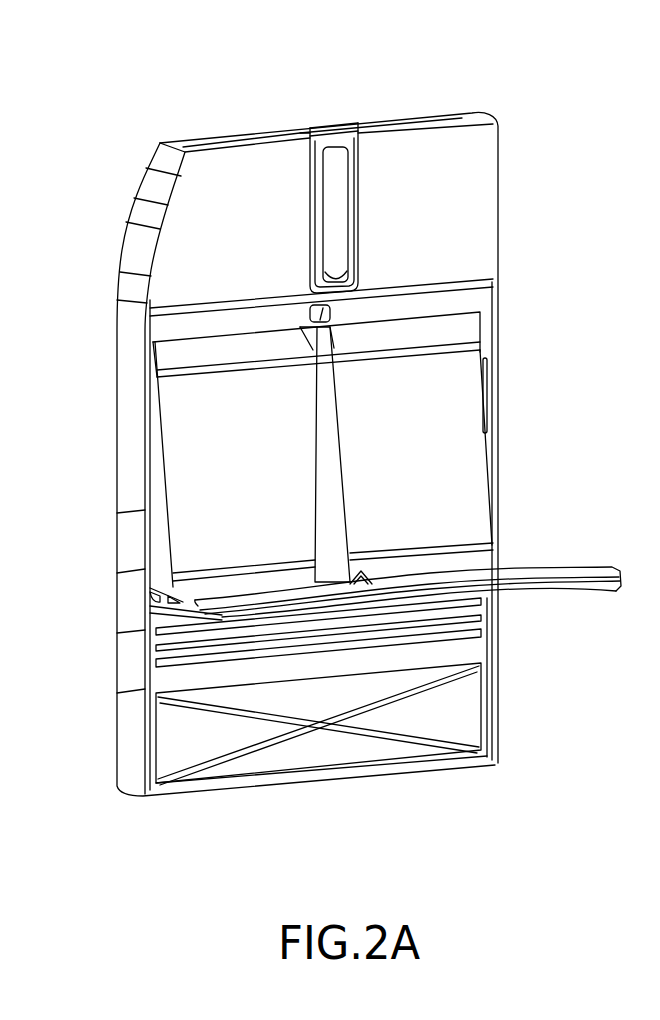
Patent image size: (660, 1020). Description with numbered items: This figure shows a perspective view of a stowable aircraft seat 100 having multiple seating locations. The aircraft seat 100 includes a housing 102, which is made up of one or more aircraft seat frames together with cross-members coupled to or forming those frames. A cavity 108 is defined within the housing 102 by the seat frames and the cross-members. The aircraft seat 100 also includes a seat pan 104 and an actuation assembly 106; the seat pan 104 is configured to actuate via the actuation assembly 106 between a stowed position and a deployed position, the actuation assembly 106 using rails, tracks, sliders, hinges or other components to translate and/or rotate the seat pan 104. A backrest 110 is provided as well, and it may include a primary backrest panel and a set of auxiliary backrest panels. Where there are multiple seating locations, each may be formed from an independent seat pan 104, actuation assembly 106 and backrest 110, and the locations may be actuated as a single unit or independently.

The aircraft seat 100 is at (135, 89).
The housing 102 is at (427, 150).
The seat pan 104 is at (275, 613).
The actuation assembly 106 is at (147, 631).
The cavity 108 is at (171, 544).
The backrest 110 is at (177, 424).